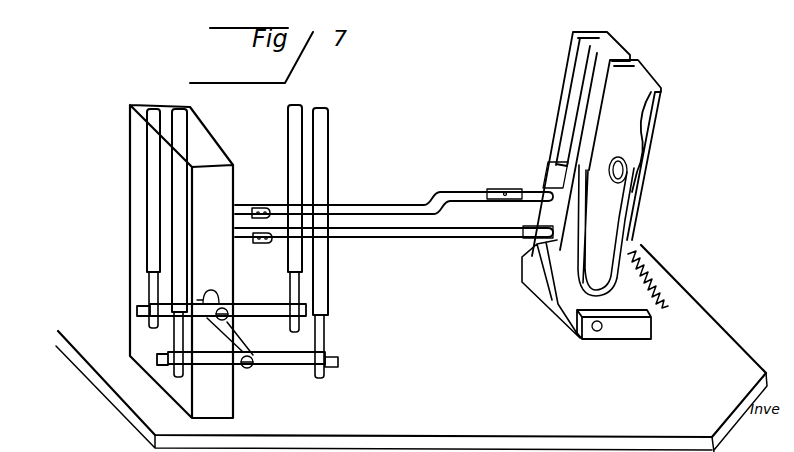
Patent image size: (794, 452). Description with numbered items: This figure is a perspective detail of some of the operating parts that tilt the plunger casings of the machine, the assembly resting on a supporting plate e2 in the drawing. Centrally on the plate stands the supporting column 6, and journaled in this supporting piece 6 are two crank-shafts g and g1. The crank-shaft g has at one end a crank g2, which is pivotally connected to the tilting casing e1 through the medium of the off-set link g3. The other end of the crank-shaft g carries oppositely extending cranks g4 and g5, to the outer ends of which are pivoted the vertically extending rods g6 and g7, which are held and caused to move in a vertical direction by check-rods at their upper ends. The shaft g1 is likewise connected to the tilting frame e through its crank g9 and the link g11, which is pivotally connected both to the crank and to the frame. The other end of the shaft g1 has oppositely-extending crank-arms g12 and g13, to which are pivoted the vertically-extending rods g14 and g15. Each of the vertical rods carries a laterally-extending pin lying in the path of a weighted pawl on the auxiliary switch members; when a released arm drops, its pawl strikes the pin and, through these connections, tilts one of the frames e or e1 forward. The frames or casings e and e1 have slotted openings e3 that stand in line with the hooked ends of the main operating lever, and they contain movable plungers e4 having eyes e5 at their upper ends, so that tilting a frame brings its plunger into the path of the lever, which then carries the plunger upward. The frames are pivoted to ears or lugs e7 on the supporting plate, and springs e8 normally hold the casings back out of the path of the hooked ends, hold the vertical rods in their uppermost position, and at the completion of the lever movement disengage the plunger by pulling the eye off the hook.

The supporting column 6 is at (181, 261).
The crank-shaft g is at (228, 310).
The crank-shaft g1 is at (248, 366).
The crank g2 is at (248, 204).
The off-set link g3 is at (397, 206).
The crank g4 is at (167, 318).
The crank g5 is at (277, 316).
The vertically extending rod g6 is at (153, 256).
The vertically extending rod g7 is at (296, 249).
The crank g9 is at (246, 242).
The link g11 is at (447, 238).
The crank-arm g12 is at (213, 359).
The crank-arm g13 is at (302, 364).
The vertically-extending rod g14 is at (178, 284).
The vertically-extending rod g15 is at (320, 281).
The tilting frame e is at (654, 77).
The tilting casing e1 is at (624, 42).
The base plate e2 is at (694, 331).
The slotted opening e3 is at (600, 167).
The movable plunger e4 is at (607, 251).
The eye e5 is at (624, 167).
The ear or lug e7 is at (621, 329).
The spring e8 is at (634, 258).